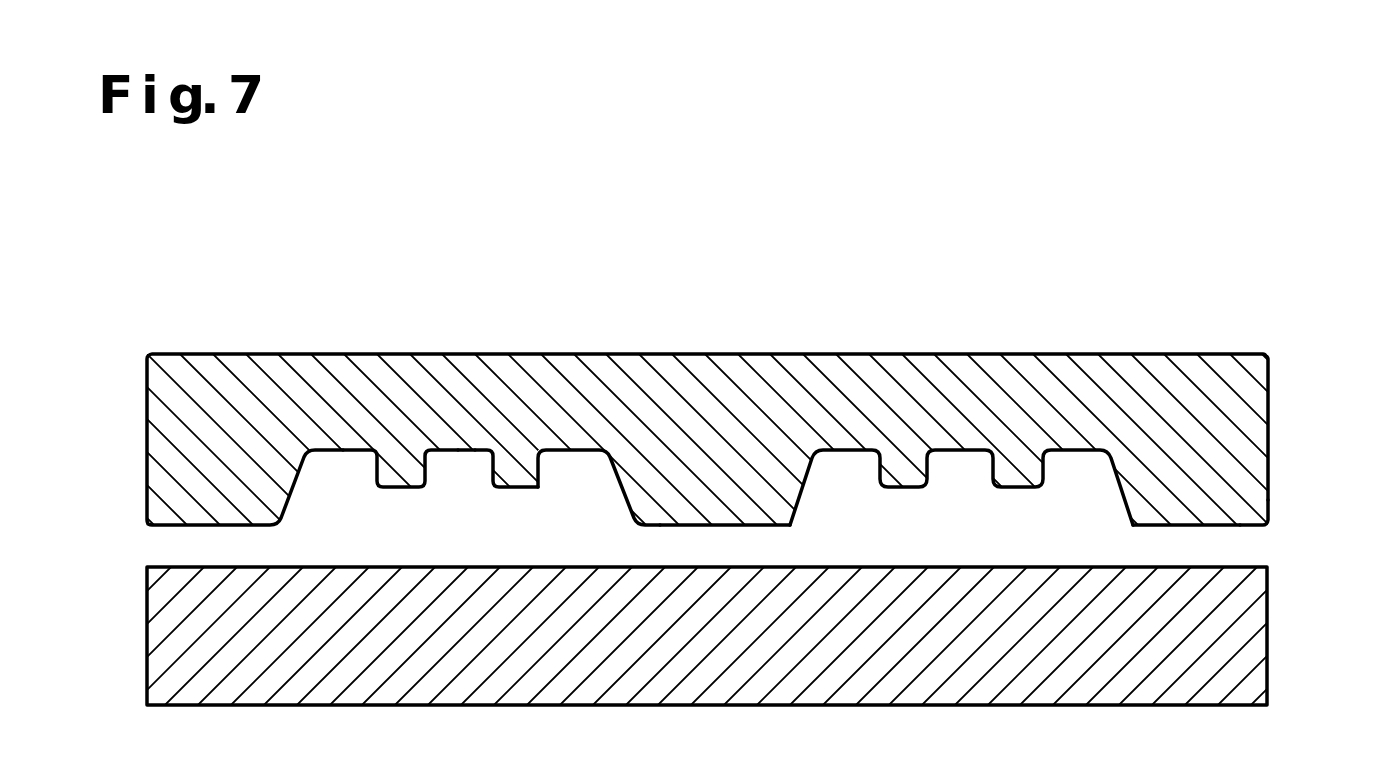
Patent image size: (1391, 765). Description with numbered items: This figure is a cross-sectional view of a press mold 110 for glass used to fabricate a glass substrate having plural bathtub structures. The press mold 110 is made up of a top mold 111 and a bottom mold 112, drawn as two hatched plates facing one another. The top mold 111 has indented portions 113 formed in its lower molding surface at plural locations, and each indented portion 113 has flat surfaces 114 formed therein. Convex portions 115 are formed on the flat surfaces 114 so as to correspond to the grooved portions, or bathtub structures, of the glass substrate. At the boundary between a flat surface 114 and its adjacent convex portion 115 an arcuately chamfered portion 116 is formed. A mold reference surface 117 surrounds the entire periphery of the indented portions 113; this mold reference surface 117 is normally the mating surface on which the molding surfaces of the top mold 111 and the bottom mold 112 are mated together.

The press mold 110 is at (230, 252).
The top mold 111 is at (1258, 443).
The bottom mold 112 is at (1255, 652).
The indented portions 113 is at (1110, 500).
The flat surfaces 114 is at (343, 462).
The convex portions 115 is at (520, 492).
The arcuately chamfered portion 116 is at (548, 458).
The mold reference surface 117 is at (1248, 527).